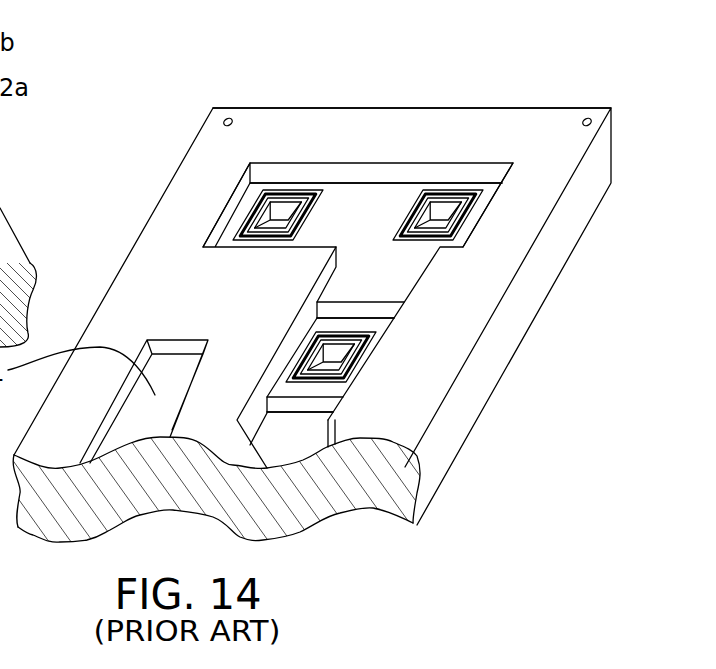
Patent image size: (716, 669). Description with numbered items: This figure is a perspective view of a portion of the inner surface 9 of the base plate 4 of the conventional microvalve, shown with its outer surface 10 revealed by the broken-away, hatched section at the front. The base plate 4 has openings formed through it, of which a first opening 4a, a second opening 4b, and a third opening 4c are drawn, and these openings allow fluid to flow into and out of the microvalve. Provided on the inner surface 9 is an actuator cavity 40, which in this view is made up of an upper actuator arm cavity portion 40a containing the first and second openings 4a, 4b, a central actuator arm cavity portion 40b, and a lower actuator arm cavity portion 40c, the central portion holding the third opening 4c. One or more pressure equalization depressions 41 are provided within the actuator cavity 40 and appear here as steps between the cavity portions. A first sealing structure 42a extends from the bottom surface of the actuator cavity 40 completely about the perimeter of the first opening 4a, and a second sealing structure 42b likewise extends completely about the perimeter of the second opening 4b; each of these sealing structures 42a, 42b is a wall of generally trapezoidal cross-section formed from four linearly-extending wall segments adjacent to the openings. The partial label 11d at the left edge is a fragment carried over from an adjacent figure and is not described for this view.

The base plate 4 is at (278, 108).
The actuator cavity 40 is at (347, 201).
The upper actuator arm cavity portion 40a is at (391, 210).
The central actuator arm cavity portion 40b is at (340, 386).
The lower actuator arm cavity portion 40c is at (283, 442).
The first opening 4a is at (273, 218).
The second opening 4b is at (444, 222).
The third opening 4c is at (338, 351).
The inner surface 9 is at (545, 125).
The outer surface 10 is at (383, 503).
The pressure equalization depressions 41 is at (360, 308).
The first sealing structure 42a is at (265, 233).
The second sealing structure 42b is at (468, 212).
The wall portion 11d is at (0, 150).